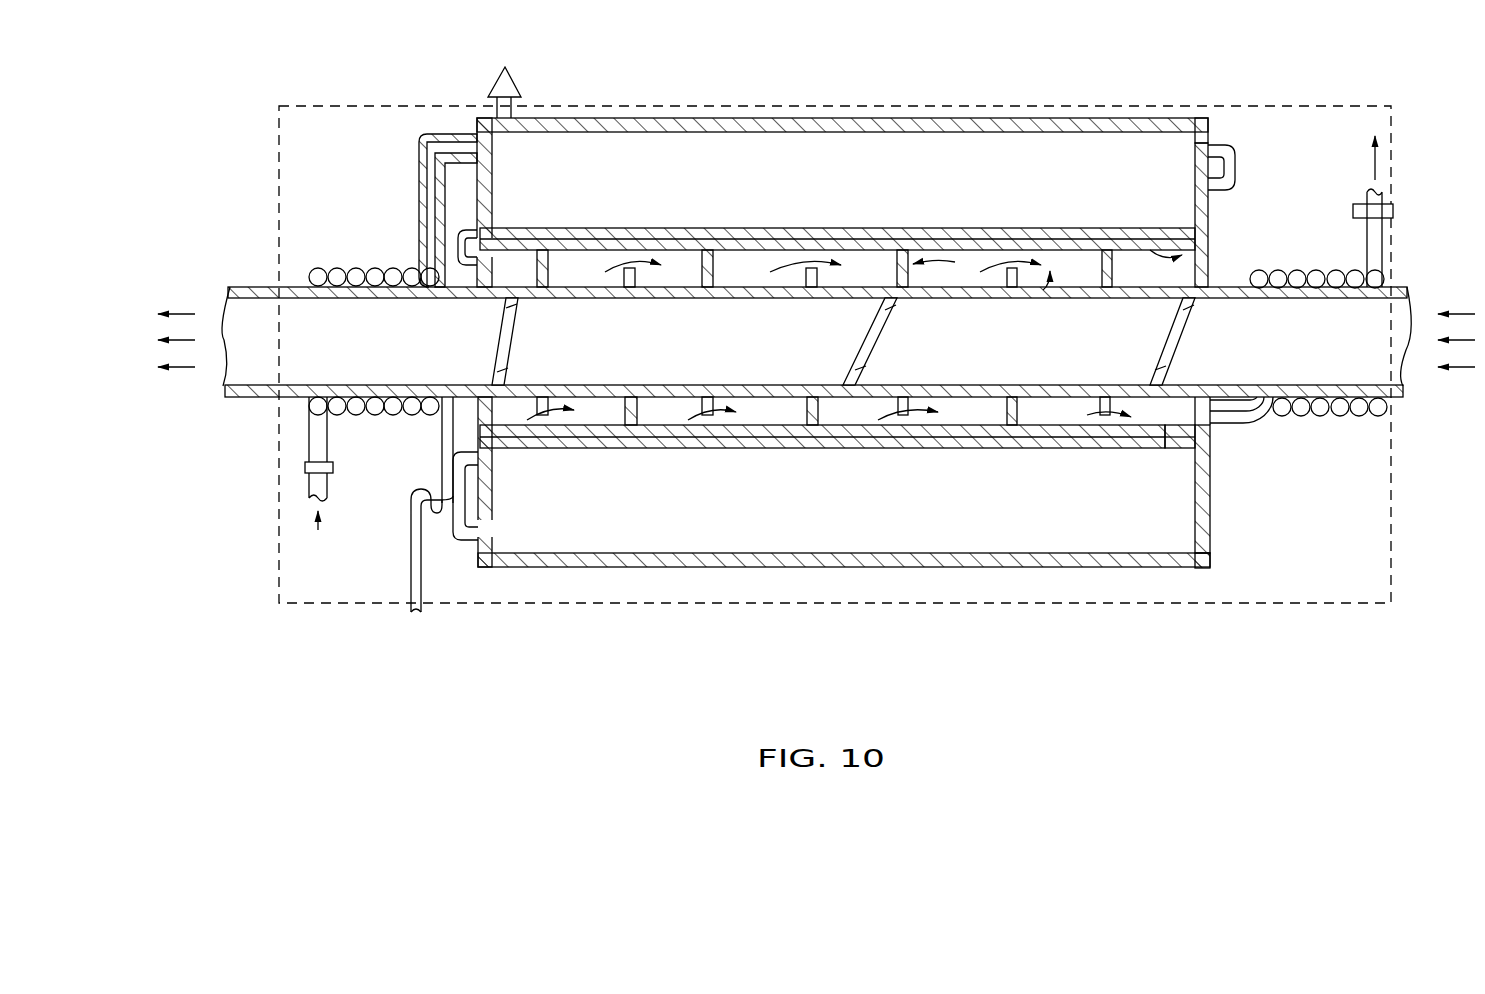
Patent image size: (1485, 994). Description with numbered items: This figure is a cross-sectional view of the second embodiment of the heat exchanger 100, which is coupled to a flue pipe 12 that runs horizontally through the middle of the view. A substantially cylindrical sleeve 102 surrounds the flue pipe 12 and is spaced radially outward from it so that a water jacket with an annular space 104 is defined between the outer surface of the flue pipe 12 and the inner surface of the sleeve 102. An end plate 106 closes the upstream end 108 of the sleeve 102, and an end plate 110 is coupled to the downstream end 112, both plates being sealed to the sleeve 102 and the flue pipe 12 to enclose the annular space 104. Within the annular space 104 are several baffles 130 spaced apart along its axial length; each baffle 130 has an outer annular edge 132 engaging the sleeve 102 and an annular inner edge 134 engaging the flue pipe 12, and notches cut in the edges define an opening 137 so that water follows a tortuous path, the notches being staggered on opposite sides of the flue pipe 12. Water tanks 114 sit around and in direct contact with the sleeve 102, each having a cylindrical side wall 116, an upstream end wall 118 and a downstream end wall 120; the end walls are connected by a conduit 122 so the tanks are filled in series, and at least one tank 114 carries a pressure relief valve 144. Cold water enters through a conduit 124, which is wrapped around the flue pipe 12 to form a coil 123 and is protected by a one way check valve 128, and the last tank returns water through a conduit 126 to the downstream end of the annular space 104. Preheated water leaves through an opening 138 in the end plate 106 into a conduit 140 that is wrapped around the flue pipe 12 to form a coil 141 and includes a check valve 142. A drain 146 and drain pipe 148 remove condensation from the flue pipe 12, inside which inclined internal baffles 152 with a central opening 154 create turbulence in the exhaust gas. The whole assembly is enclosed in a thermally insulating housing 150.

The flue pipe 12 is at (1406, 400).
The heat exchanger 100 is at (795, 88).
The sleeve 102 is at (1083, 261).
The annular space 104 is at (1051, 273).
The end plate 106 is at (1210, 258).
The upstream end 108 is at (1150, 250).
The end plate 110 is at (463, 298).
The downstream end 112 is at (517, 279).
The water tank 114 is at (1213, 520).
The cylindrical side wall 116 is at (960, 117).
The upstream end wall 118 is at (1210, 135).
The downstream end wall 120 is at (494, 180).
The conduit 122 is at (1238, 168).
The coil 123 is at (343, 266).
The conduit 124 is at (447, 134).
The conduit 126 is at (462, 232).
The one way check valve 128 is at (305, 467).
The baffle 130 is at (940, 245).
The outer annular edge 132 is at (700, 258).
The annular inner edge 134 is at (715, 270).
The opening 137 is at (808, 245).
The opening 138 is at (1165, 447).
The conduit 140 is at (1383, 258).
The coil 141 is at (1313, 270).
The check valve 142 is at (1395, 211).
The pressure relief valve 144 is at (521, 88).
The drain 146 is at (442, 385).
The drain pipe 148 is at (410, 538).
The thermally insulating housing 150 is at (923, 606).
The internal baffle 152 is at (903, 302).
The central opening 154 is at (1185, 330).